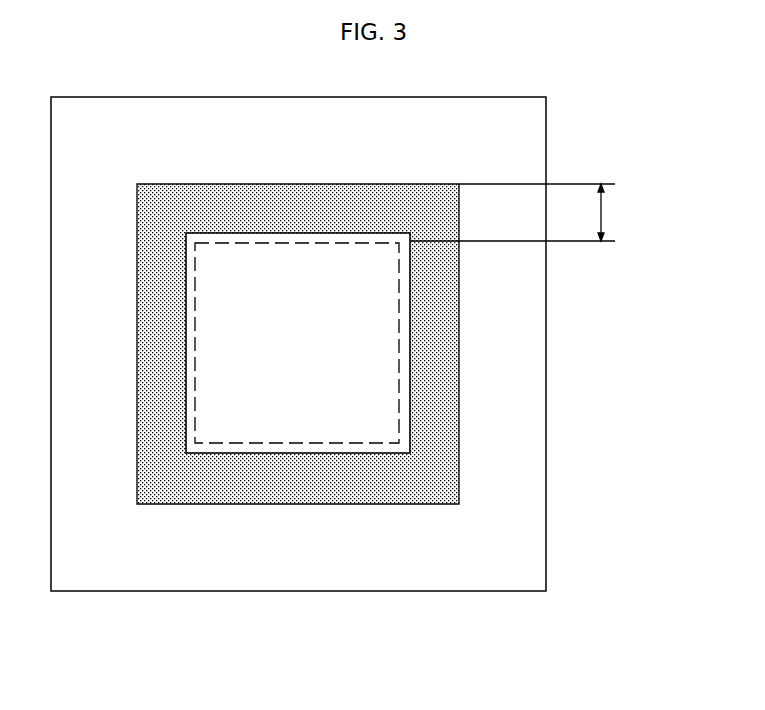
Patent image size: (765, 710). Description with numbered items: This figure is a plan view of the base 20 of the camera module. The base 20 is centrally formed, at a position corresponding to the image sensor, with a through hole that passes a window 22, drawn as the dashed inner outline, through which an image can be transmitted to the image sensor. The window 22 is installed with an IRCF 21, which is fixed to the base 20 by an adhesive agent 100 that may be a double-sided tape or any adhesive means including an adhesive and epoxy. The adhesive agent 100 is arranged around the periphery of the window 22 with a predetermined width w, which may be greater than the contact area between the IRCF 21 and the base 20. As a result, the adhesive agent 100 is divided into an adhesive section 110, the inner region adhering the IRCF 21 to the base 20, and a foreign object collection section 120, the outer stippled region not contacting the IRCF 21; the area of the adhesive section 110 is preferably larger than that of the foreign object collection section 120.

The base 20 is at (500, 287).
The IRCF 21 is at (375, 345).
The window 22 is at (307, 443).
The adhesive agent 100 is at (627, 442).
The adhesive section 110 is at (410, 415).
The foreign object collection section 120 is at (438, 478).
The width w is at (516, 212).